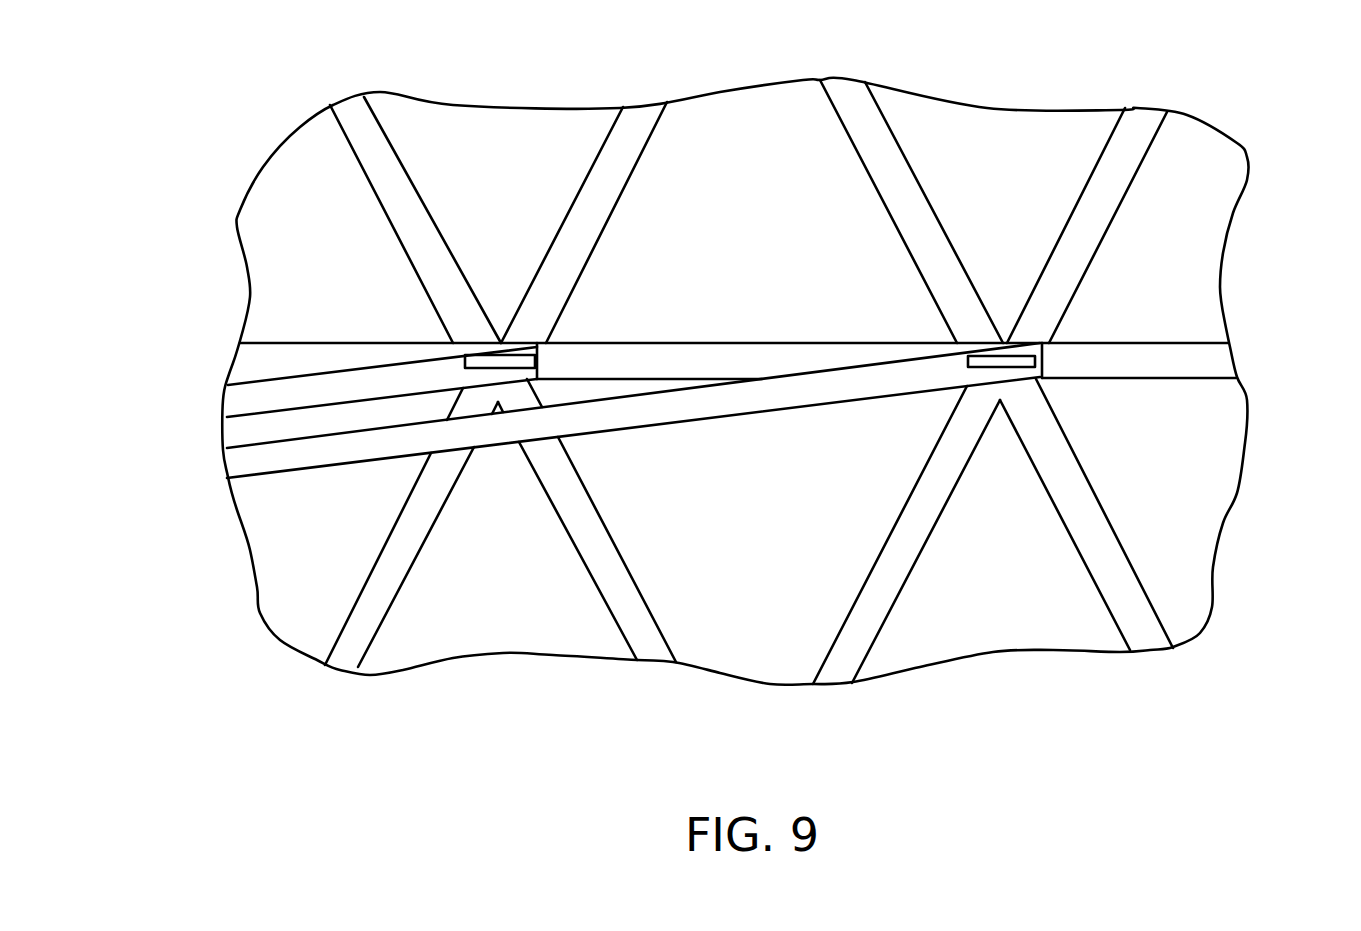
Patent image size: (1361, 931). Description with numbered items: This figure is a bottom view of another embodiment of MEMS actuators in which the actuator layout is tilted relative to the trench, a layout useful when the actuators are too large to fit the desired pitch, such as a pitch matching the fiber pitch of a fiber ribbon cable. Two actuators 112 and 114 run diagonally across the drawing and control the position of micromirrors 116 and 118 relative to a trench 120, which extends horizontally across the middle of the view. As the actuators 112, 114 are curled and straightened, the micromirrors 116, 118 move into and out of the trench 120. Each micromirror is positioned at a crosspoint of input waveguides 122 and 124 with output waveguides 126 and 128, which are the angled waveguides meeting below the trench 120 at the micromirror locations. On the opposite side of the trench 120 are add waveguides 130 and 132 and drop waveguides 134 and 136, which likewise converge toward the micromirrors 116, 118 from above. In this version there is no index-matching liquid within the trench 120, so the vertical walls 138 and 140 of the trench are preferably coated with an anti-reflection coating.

The actuator 112 is at (228, 403).
The actuator 114 is at (230, 460).
The micromirror 116 is at (540, 343).
The micromirror 118 is at (1045, 343).
The trench 120 is at (1228, 362).
The input waveguide 122 is at (355, 660).
The input waveguide 124 is at (842, 672).
The output waveguide 126 is at (650, 655).
The output waveguide 128 is at (1150, 648).
The add waveguide 130 is at (353, 100).
The add waveguide 132 is at (845, 90).
The drop waveguide 134 is at (642, 108).
The drop waveguide 136 is at (1142, 117).
The vertical wall 138 is at (1205, 343).
The vertical wall 140 is at (1232, 378).